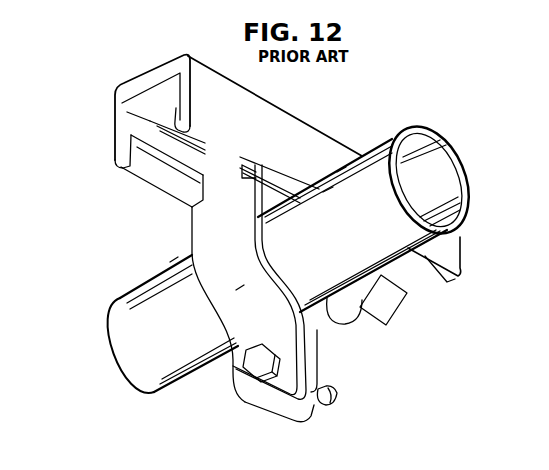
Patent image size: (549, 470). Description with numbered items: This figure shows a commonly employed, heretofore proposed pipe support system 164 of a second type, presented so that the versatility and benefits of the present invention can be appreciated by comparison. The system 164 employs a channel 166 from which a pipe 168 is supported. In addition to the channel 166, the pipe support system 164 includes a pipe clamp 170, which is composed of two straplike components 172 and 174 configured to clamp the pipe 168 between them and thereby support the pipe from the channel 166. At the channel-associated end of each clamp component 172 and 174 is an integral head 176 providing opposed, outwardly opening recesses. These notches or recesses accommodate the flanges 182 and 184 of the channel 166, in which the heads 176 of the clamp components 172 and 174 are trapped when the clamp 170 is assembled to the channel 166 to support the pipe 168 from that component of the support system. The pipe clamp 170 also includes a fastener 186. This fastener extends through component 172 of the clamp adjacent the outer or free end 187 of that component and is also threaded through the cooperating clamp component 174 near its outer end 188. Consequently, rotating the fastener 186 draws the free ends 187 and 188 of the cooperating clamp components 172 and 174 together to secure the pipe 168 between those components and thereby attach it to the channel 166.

The pipe support system 164 is at (144, 193).
The channel 166 is at (143, 72).
The pipe 168 is at (370, 146).
The pipe clamp 170 is at (186, 243).
The clamp component 172 is at (268, 253).
The clamp component 174 is at (330, 322).
The integral head 176 is at (206, 146).
The flange 182 is at (124, 144).
The flange 184 is at (176, 113).
The fastener 186 is at (244, 351).
The free end 187 is at (240, 398).
The outer end 188 is at (291, 422).